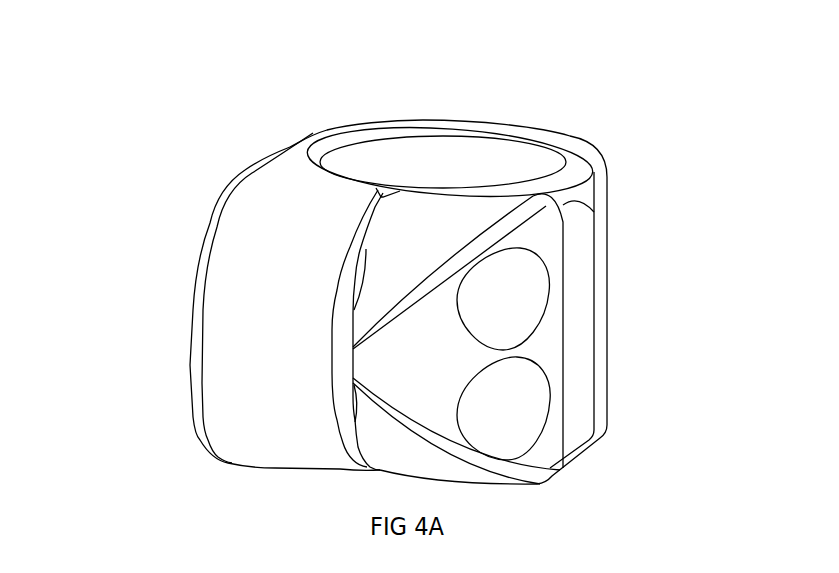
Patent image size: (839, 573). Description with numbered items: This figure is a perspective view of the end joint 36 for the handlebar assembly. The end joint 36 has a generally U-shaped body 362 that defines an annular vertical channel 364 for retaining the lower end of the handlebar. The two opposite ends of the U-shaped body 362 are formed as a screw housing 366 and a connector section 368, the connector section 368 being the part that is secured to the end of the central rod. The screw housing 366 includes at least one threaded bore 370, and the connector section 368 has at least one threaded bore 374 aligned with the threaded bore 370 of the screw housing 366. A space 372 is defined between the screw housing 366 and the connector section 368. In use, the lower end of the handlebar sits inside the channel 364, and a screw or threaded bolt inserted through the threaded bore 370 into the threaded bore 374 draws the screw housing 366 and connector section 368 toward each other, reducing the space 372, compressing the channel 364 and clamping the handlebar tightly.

The end joint 36 is at (685, 23).
The U-shaped body 362 is at (328, 125).
The annular vertical channel 364 is at (410, 140).
The screw housing 366 is at (557, 246).
The connector section 368 is at (213, 323).
The threaded bore 370 is at (537, 306).
The space 372 is at (349, 448).
The threaded bore 374 is at (358, 270).